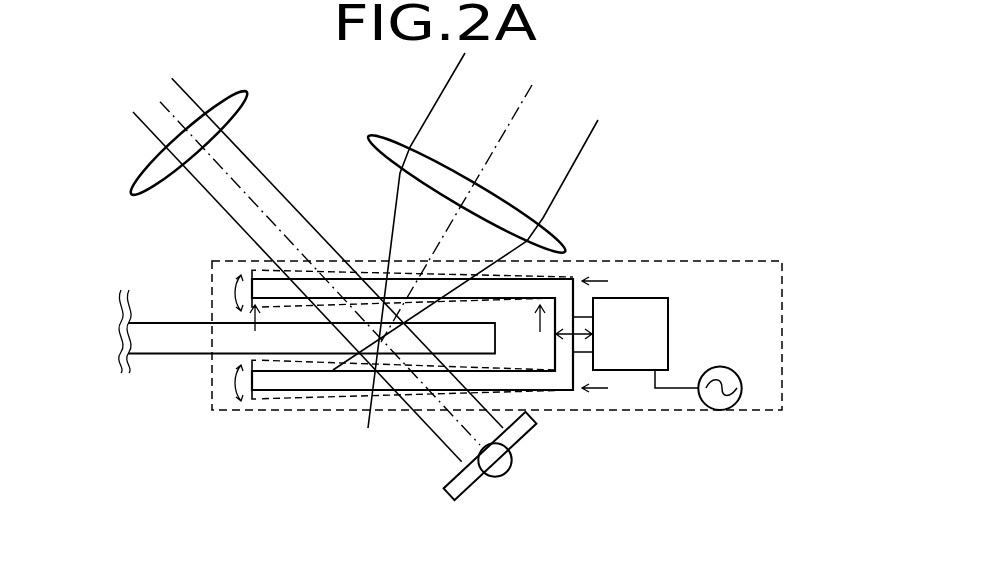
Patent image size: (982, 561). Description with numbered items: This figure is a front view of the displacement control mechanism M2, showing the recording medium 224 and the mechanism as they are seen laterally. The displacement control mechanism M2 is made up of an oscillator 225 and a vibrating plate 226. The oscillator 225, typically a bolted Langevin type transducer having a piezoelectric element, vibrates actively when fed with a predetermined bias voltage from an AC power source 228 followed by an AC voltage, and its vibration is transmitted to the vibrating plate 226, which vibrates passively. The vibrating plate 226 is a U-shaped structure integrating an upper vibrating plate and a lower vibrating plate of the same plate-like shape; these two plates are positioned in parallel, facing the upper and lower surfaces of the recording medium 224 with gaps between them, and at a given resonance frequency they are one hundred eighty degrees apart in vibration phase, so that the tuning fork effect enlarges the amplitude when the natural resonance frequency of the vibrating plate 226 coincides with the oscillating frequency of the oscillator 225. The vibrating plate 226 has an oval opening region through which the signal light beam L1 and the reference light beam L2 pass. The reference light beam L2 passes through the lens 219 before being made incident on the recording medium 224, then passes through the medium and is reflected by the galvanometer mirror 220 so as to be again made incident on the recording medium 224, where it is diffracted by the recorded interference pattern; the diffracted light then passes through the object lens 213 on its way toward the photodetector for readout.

The object lens 213 is at (557, 238).
The lens 219 is at (246, 92).
The galvanometer mirror 220 is at (480, 480).
The recording medium 224 is at (178, 354).
The oscillator 225 is at (668, 324).
The vibrating plate 226 is at (573, 390).
The AC power source 228 is at (741, 397).
The displacement control mechanism M2 is at (753, 260).
The signal light beam L1 is at (564, 174).
The reference light beam L2 is at (150, 127).